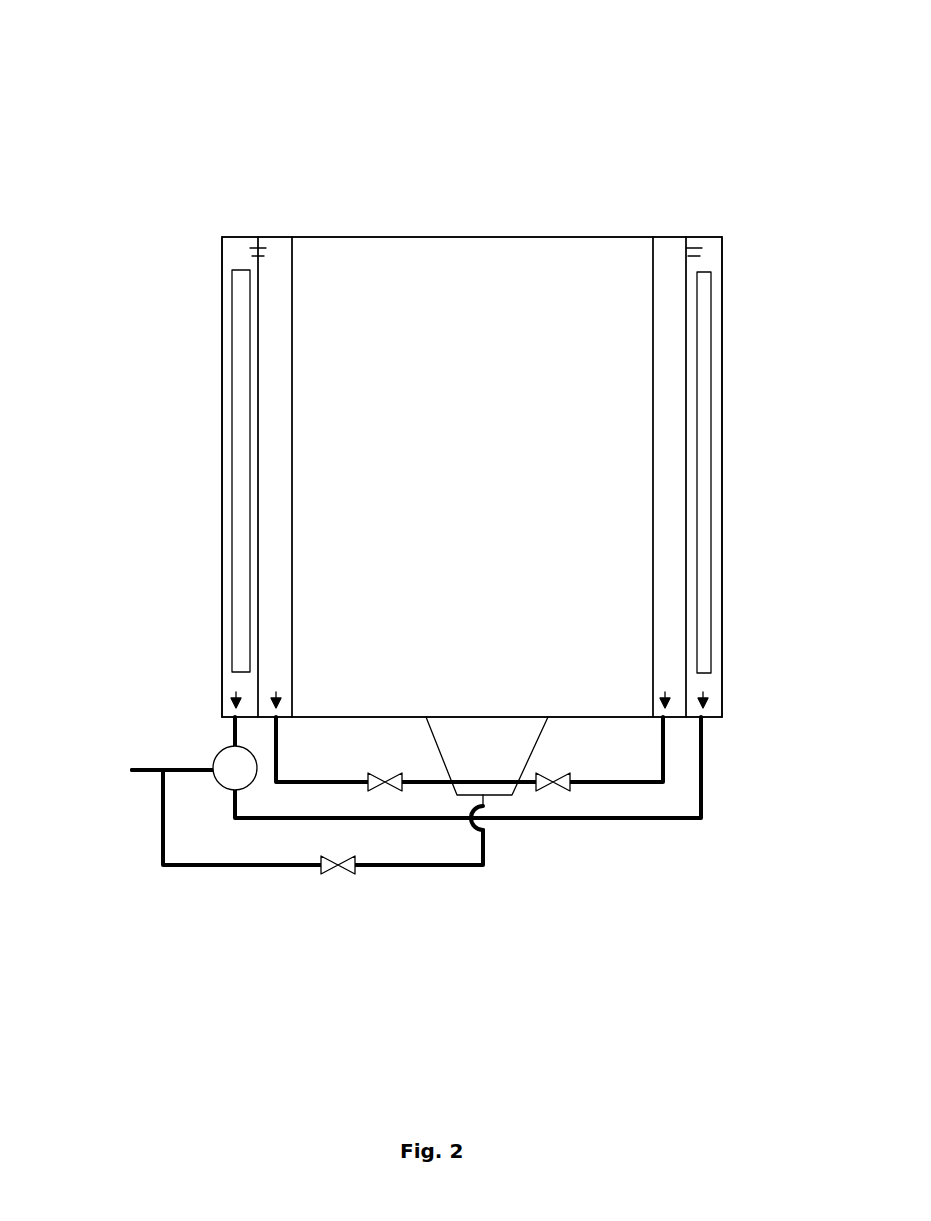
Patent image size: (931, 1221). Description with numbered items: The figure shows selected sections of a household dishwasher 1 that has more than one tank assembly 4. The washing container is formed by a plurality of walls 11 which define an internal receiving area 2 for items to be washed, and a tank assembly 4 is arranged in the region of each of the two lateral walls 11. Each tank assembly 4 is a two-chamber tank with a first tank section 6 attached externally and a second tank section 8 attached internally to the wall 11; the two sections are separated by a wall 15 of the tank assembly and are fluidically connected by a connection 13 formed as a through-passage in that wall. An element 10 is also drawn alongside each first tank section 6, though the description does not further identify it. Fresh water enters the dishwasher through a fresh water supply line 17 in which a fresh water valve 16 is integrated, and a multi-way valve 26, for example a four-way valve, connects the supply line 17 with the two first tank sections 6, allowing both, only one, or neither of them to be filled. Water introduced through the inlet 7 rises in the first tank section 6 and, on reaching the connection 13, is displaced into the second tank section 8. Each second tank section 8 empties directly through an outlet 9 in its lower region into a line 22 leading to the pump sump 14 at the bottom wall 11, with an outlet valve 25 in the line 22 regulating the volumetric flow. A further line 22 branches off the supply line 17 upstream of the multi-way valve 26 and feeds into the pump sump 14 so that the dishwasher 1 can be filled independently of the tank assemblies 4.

The household dishwasher 1 is at (203, 72).
The receiving area 2 is at (576, 262).
The tank assembly 4 is at (275, 237).
The first tank section 6 is at (226, 522).
The inlet 7 is at (236, 698).
The second tank section 8 is at (275, 485).
The outlet 9 is at (278, 698).
The electrode 10 is at (238, 380).
The wall 11 is at (395, 246).
The connection 13 is at (258, 248).
The pump sump 14 is at (513, 750).
The wall of the tank assembly 15 is at (258, 413).
The fresh water valve 16 is at (326, 873).
The fresh water supply line 17 is at (135, 765).
The line 22 is at (308, 782).
The outlet valve 25 is at (398, 780).
The multi-way valve 26 is at (214, 755).